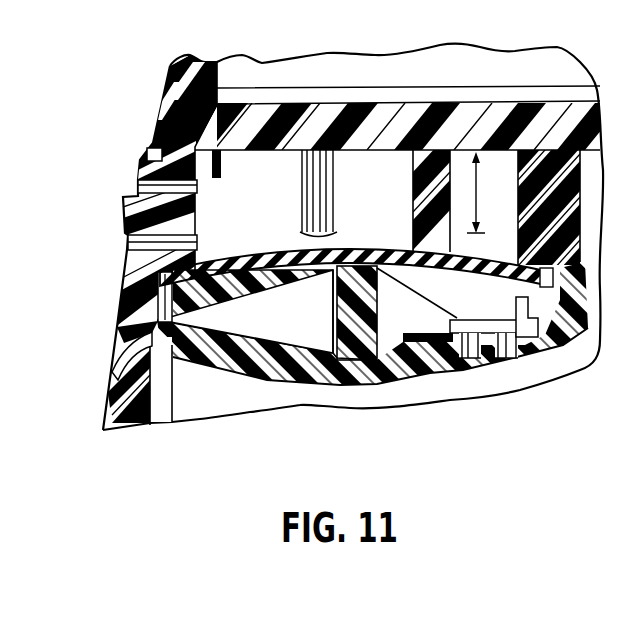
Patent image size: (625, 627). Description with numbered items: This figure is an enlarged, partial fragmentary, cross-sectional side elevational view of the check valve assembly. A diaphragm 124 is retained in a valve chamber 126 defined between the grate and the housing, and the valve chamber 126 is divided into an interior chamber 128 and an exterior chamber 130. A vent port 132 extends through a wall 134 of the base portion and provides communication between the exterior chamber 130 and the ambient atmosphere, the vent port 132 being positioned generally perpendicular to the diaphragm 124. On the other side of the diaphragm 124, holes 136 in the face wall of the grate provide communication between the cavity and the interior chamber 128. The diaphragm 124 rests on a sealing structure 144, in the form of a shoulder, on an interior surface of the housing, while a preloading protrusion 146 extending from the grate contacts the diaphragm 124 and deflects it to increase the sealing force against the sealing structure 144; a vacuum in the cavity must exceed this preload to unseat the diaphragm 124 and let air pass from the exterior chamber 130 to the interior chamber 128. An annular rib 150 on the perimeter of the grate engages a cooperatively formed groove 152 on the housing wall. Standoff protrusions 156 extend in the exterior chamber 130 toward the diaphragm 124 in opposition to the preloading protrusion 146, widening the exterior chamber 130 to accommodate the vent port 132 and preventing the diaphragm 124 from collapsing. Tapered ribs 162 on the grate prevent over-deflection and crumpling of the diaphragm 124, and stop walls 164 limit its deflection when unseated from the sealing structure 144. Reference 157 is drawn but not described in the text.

The diaphragm 124 is at (399, 245).
The valve chamber 126 is at (216, 190).
The interior chamber 128 is at (502, 343).
The exterior chamber 130 is at (129, 199).
The vent port 132 is at (125, 240).
The wall 134 is at (108, 388).
The holes 136 is at (510, 345).
The sealing structure 144 is at (518, 261).
The preloading protrusion 146 is at (395, 383).
The annular rib 150 is at (110, 373).
The groove 152 is at (172, 420).
The standoff protrusions 156 is at (305, 203).
The wedge 157 is at (258, 277).
The tapered ribs 162 is at (292, 385).
The stop walls 164 is at (477, 345).